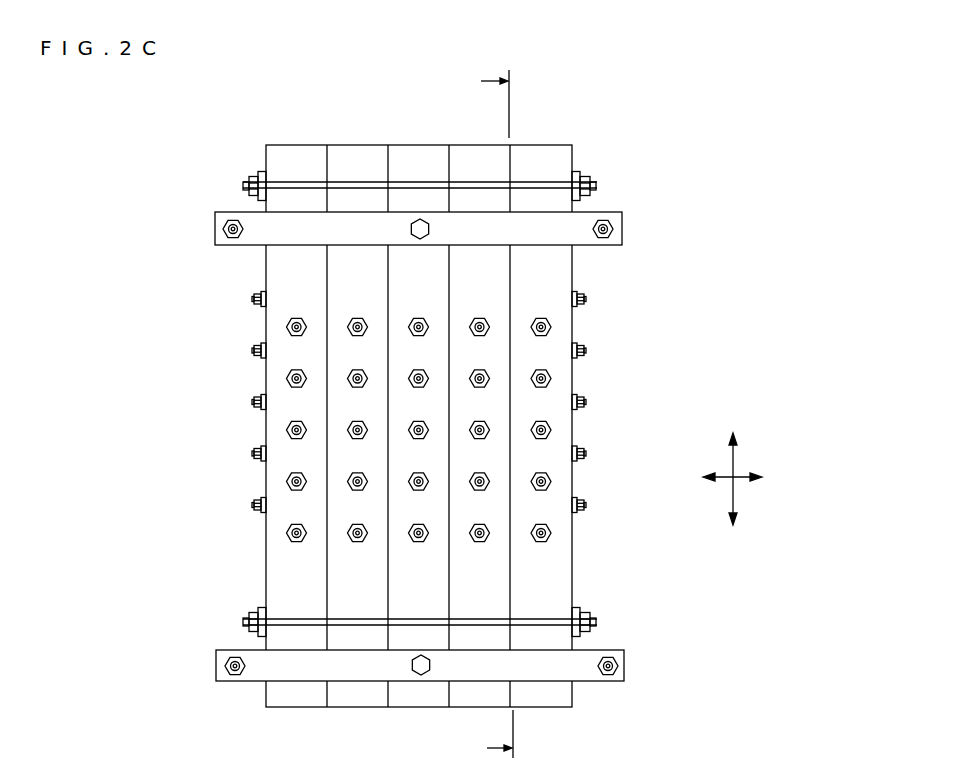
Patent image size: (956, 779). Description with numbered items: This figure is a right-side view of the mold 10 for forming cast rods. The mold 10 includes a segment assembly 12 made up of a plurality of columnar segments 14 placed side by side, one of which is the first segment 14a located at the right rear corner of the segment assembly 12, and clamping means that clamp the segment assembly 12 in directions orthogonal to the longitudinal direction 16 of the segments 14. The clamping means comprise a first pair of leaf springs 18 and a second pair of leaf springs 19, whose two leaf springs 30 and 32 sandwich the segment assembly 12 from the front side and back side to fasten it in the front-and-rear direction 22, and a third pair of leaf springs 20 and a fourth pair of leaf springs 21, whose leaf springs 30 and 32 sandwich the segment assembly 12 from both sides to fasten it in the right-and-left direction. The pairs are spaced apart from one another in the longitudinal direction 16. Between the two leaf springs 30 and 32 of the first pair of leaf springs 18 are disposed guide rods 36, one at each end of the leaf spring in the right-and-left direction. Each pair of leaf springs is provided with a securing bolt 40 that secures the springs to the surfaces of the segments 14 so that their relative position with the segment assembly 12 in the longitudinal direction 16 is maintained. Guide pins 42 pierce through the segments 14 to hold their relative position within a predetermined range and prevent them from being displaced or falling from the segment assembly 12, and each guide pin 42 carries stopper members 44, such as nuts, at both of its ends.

The mold for forming cast rods 10 is at (589, 86).
The segment assembly 12 is at (456, 398).
The columnar segments 14 is at (302, 144).
The first segment 14a is at (539, 145).
The longitudinal direction 16 is at (735, 460).
The first pair of leaf springs 18 is at (420, 425).
The second pair of leaf springs 19 is at (420, 622).
The third pair of leaf springs 20 is at (418, 228).
The fourth pair of leaf springs 21 is at (420, 665).
The front-and-rear direction 22 is at (740, 490).
The leaf spring 30 is at (261, 172).
The leaf spring 32 is at (575, 170).
The guide rods 36 is at (482, 186).
The securing bolt 40 is at (420, 219).
The guide pins 42 is at (228, 243).
The stopper members 44 is at (216, 222).